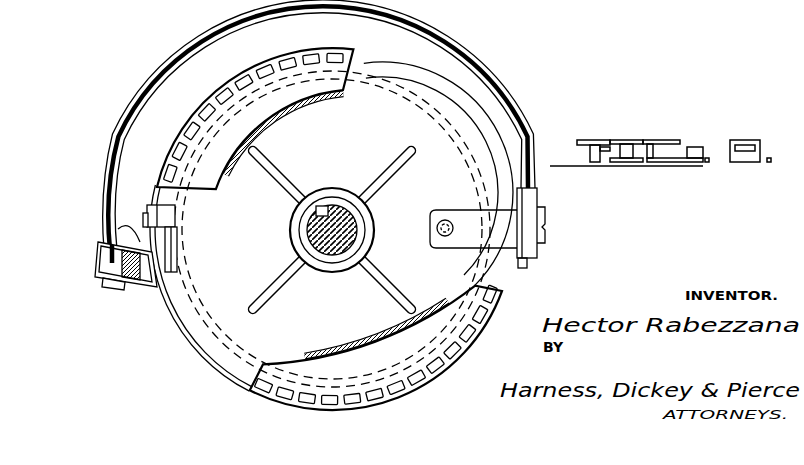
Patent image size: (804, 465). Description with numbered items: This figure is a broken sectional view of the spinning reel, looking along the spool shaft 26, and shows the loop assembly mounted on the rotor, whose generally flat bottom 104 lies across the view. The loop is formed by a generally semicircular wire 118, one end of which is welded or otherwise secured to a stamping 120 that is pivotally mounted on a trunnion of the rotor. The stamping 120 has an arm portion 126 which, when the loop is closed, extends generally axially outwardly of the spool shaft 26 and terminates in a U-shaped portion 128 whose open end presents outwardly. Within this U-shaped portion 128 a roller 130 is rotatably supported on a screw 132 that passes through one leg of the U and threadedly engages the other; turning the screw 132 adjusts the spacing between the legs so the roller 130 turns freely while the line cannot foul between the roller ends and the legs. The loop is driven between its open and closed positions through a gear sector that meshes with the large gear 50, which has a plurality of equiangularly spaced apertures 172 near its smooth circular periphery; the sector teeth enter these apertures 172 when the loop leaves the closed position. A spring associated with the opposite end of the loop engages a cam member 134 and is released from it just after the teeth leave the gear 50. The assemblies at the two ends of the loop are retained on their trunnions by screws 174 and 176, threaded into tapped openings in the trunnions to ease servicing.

The semicircular wire 118 is at (124, 136).
The rotor bottom 104 is at (351, 316).
The apertures 172 is at (200, 107).
The large gear 50 is at (312, 121).
The spool shaft 26 is at (310, 228).
The screw 176 is at (148, 210).
The roller 130 is at (105, 258).
The U-shaped portion 128 is at (162, 266).
The arm portion 126 is at (124, 233).
The screw 132 is at (108, 291).
The stamping 120 is at (143, 299).
The cam member 134 is at (548, 197).
The screw 174 is at (549, 226).